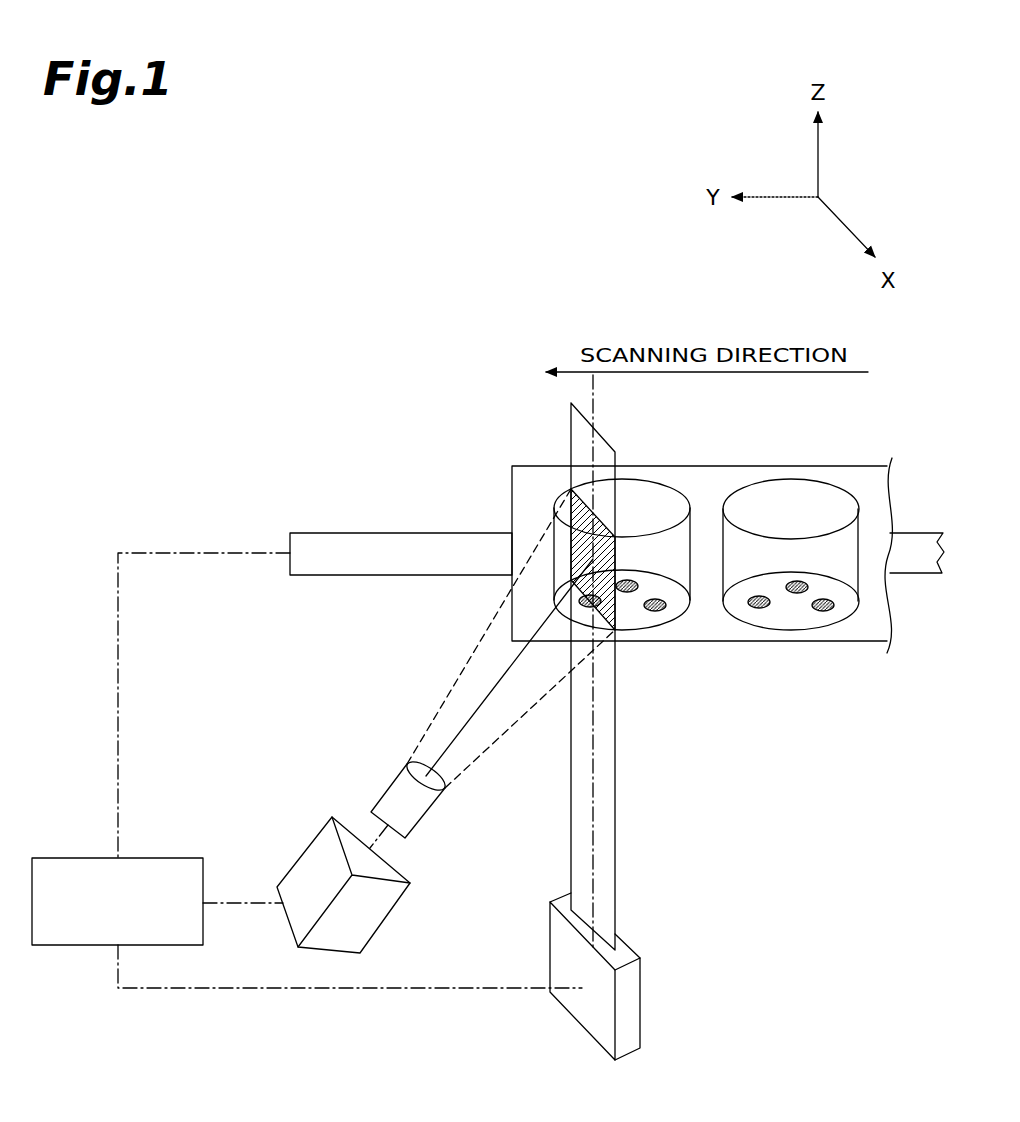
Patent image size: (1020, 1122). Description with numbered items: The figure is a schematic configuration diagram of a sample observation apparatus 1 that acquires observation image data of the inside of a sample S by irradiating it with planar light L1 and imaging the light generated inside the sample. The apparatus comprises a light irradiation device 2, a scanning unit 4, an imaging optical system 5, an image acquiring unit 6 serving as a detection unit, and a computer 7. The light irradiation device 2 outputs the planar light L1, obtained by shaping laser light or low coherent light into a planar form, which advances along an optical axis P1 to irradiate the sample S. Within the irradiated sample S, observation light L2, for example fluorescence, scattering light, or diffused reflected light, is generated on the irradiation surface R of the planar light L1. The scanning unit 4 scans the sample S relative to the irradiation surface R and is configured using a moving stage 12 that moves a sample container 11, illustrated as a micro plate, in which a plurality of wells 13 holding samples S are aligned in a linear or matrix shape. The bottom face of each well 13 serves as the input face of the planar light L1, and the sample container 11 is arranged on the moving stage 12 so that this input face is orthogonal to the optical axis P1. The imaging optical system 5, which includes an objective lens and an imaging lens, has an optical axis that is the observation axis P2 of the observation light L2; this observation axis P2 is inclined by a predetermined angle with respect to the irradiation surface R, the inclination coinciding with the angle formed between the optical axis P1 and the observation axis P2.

The sample observation apparatus 1 is at (172, 388).
The light irradiation device 2 is at (628, 998).
The scanning unit 4 is at (617, 517).
The imaging optical system 5 is at (402, 775).
The image acquiring unit 6 is at (310, 835).
The computer 7 is at (62, 858).
The sample container 11 is at (550, 466).
The moving stage 12 is at (352, 533).
The well 13 is at (663, 500).
The sample S is at (655, 612).
The irradiation surface R is at (553, 533).
The planar light L1 is at (616, 800).
The observation light L2 is at (460, 680).
The optical axis P1 is at (594, 705).
The observation axis P2 is at (505, 672).